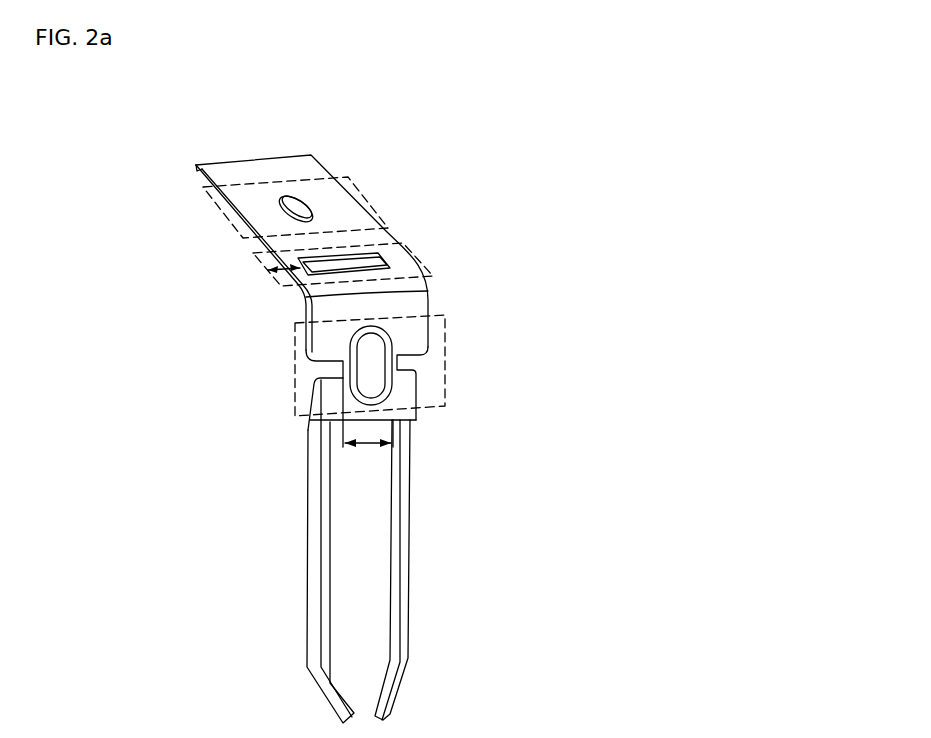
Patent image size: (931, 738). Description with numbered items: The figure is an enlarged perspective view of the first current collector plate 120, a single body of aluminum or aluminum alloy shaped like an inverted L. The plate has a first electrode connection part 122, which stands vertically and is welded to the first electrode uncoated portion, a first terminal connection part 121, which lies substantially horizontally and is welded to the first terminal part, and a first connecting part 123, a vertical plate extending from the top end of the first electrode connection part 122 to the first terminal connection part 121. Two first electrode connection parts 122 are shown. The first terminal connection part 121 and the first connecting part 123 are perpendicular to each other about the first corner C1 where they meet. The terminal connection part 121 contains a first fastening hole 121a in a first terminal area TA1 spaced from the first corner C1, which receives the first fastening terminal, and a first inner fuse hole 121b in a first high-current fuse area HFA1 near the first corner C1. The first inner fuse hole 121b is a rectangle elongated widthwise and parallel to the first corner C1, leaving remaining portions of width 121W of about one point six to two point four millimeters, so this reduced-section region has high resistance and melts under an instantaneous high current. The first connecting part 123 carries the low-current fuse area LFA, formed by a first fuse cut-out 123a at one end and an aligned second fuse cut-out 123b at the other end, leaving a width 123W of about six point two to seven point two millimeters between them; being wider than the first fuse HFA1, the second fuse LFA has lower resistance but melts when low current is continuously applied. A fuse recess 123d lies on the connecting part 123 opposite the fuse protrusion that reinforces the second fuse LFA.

The first current collector plate 120 is at (540, 142).
The first terminal connection part 121 is at (302, 165).
The first fastening hole 121a is at (283, 196).
The first inner fuse hole 121b is at (379, 255).
The width of remaining portions 121W is at (300, 295).
The first terminal area TA1 is at (213, 208).
The first high-current fuse area HFA1 is at (413, 252).
The first corner C1 is at (430, 292).
The first connecting part 123 is at (418, 328).
The first fuse cut-out 123a is at (336, 368).
The second fuse cut-out 123b is at (405, 356).
The fuse recess 123d is at (367, 377).
The width of second fuse 123W is at (368, 445).
The low-current fuse area LFA is at (447, 390).
The first electrode connection part 122 is at (323, 598).